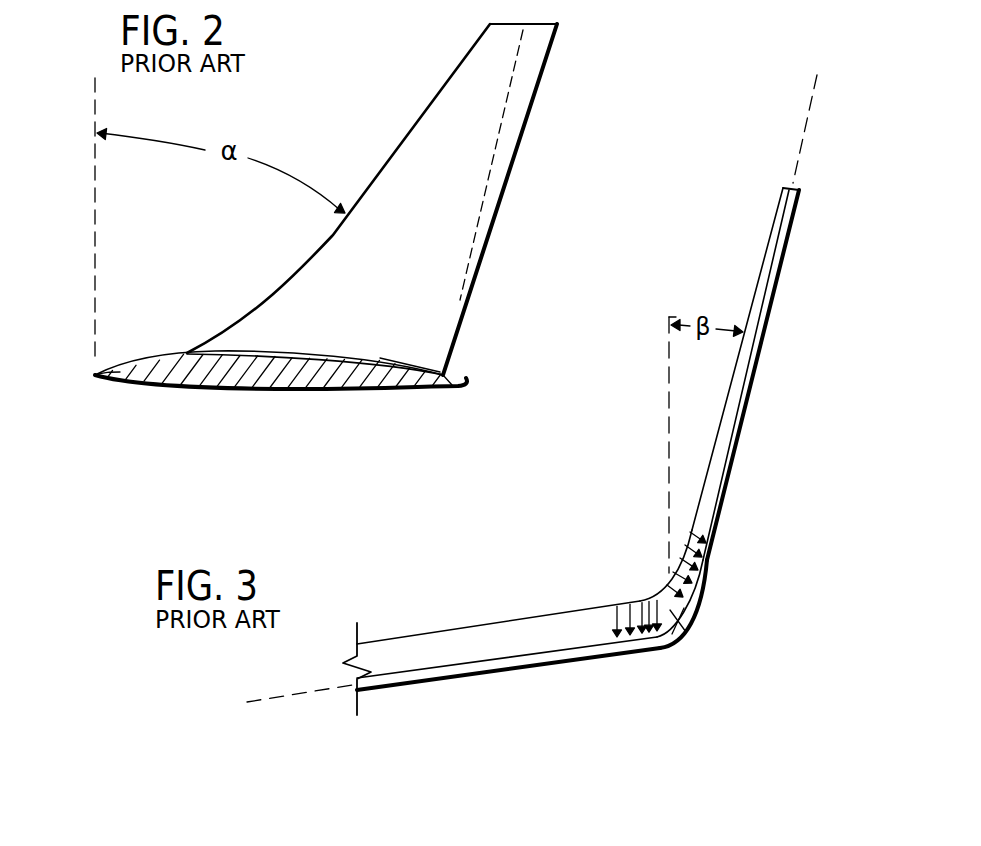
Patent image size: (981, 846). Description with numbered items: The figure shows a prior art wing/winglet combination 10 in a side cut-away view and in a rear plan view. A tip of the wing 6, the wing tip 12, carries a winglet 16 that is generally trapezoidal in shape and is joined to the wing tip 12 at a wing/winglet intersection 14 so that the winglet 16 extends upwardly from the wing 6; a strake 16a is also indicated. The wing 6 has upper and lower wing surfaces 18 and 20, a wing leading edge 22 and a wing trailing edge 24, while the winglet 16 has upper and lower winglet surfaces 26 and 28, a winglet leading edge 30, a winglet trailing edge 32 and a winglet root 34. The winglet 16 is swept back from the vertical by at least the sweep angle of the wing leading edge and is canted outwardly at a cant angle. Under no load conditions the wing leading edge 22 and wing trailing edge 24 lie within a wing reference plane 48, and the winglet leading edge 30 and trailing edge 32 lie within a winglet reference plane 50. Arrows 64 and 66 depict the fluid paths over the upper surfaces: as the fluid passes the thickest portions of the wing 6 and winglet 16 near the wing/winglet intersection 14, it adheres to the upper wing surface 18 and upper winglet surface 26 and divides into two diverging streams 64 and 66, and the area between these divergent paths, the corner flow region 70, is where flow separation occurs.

In FIG. 3, the wing 6 is at (414, 637).
In FIG. 2, the wing/winglet combination 10 is at (528, 189).
In FIG. 3, the wing/winglet combination 10 is at (745, 486).
In FIG. 2, the wing tip 12 is at (317, 402).
In FIG. 3, the wing tip 12 is at (678, 640).
In FIG. 2, the wing/winglet intersection 14 is at (404, 352).
In FIG. 3, the wing/winglet intersection 14 is at (705, 622).
In FIG. 2, the winglet 16 is at (546, 93).
In FIG. 2, the strake 16a is at (200, 345).
In FIG. 2, the upper wing surface 18 is at (235, 352).
In FIG. 3, the upper wing surface 18 is at (483, 623).
In FIG. 2, the lower wing surface 20 is at (237, 390).
In FIG. 3, the lower wing surface 20 is at (532, 666).
In FIG. 2, the wing leading edge 22 is at (95, 375).
In FIG. 2, the wing trailing edge 24 is at (457, 385).
In FIG. 3, the wing trailing edge 24 is at (453, 673).
In FIG. 2, the upper winglet surface 26 is at (436, 195).
In FIG. 3, the upper winglet surface 26 is at (747, 317).
In FIG. 3, the lower winglet surface 28 is at (763, 343).
In FIG. 2, the winglet leading edge 30 is at (423, 113).
In FIG. 2, the winglet trailing edge 32 is at (523, 143).
In FIG. 3, the winglet trailing edge 32 is at (745, 400).
In FIG. 3, the winglet root 34 is at (698, 607).
In FIG. 3, the wing reference plane 48 is at (299, 689).
In FIG. 3, the winglet reference plane 50 is at (803, 133).
In FIG. 3, the fluid flow path arrows 64 is at (631, 653).
In FIG. 3, the fluid flow path arrows 66 is at (730, 570).
In FIG. 3, the corner flow region 70 is at (693, 627).